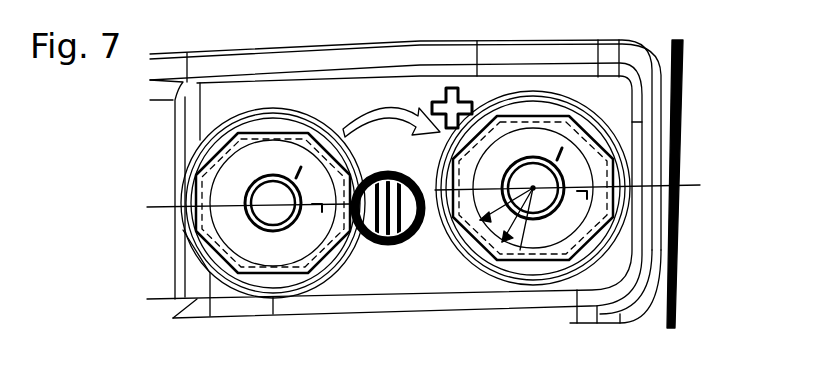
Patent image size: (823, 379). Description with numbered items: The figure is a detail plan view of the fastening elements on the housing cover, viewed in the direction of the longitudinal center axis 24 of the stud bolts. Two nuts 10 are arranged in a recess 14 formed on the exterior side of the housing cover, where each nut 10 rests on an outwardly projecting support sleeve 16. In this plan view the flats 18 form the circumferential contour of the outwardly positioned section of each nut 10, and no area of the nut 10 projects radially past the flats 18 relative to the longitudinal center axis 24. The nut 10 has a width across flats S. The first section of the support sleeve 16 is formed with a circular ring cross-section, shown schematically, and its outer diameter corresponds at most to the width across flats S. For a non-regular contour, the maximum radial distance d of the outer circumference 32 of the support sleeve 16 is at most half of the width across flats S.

The nut 10 is at (260, 153).
The recess 14 is at (605, 88).
The support sleeve 16 is at (600, 245).
The flats 18 is at (533, 190).
The longitudinal center axis 24 is at (533, 187).
The outer circumference 32 is at (310, 140).
The width across flats S is at (572, 170).
The maximum radial distance d is at (516, 245).